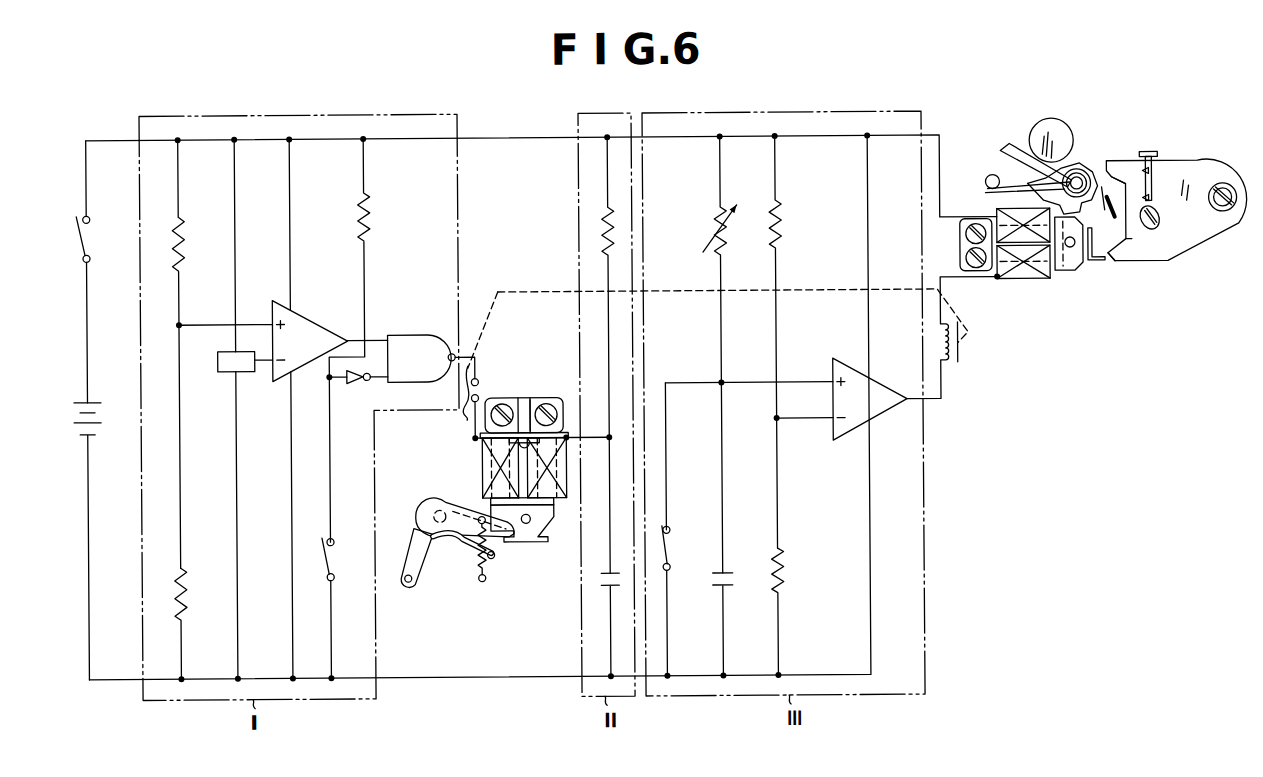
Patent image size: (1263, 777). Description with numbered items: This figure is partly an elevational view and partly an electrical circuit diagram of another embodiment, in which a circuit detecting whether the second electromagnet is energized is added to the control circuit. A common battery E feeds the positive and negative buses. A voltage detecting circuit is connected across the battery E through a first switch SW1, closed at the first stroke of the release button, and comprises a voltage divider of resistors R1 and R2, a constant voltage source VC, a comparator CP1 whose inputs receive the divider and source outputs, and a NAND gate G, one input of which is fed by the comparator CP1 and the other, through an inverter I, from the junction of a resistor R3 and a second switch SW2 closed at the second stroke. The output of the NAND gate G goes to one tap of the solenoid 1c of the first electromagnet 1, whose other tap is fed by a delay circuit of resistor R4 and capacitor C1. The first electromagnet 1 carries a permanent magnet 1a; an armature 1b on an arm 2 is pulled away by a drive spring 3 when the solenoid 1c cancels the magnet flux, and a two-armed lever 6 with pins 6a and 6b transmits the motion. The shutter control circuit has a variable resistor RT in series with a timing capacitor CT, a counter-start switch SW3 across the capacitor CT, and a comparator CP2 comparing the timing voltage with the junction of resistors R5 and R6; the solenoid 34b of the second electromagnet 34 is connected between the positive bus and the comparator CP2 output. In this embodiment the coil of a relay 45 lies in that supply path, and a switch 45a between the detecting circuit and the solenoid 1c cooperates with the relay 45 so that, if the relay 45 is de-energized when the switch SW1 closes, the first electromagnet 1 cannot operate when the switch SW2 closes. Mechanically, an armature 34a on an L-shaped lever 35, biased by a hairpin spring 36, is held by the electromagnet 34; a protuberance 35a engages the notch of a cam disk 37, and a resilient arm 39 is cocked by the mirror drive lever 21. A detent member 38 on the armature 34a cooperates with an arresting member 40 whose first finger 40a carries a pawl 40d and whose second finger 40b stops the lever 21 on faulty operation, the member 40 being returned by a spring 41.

The first electromagnet 1 is at (493, 398).
The permanent magnet 1a is at (521, 398).
The armature 1b is at (546, 531).
The solenoid 1c is at (484, 466).
The arm 2 is at (460, 505).
The drive spring 3 is at (478, 576).
The two-armed lever 6 is at (420, 564).
The pin 6a is at (408, 585).
The pin 6b is at (492, 559).
The mirror drive lever 21 is at (1119, 206).
The second electromagnet 34 is at (981, 275).
The armature 34a is at (1076, 275).
The solenoid 34b is at (1026, 283).
The L-shaped lever 35 is at (1087, 172).
The protuberance 35a is at (1035, 153).
The hairpin spring 36 is at (993, 193).
The cam disk 37 is at (1051, 122).
The detent member 38 is at (1098, 265).
The resilient arm 39 is at (1110, 222).
The arresting member 40 is at (1204, 232).
The first finger 40a is at (1129, 254).
The second finger 40b is at (1122, 165).
The pawl 40d is at (1114, 266).
The return spring 41 is at (1153, 170).
The relay 45 is at (957, 366).
The switch 45a is at (467, 406).
The first switch SW1 is at (94, 272).
The second switch SW2 is at (340, 609).
The counter-start switch SW3 is at (679, 531).
The resistor R1 is at (188, 352).
The resistor R2 is at (190, 625).
The resistor R3 is at (357, 339).
The resistor R4 is at (601, 353).
The resistor R5 is at (785, 340).
The resistor R6 is at (787, 613).
The variable resistor RT is at (723, 353).
The capacitor C1 is at (604, 625).
The timing capacitor CT is at (733, 624).
The constant voltage source VC is at (235, 410).
The comparator CP1 is at (284, 409).
The comparator CP2 is at (833, 358).
The NAND gate G is at (431, 359).
The inverter I is at (358, 387).
The battery E is at (94, 541).